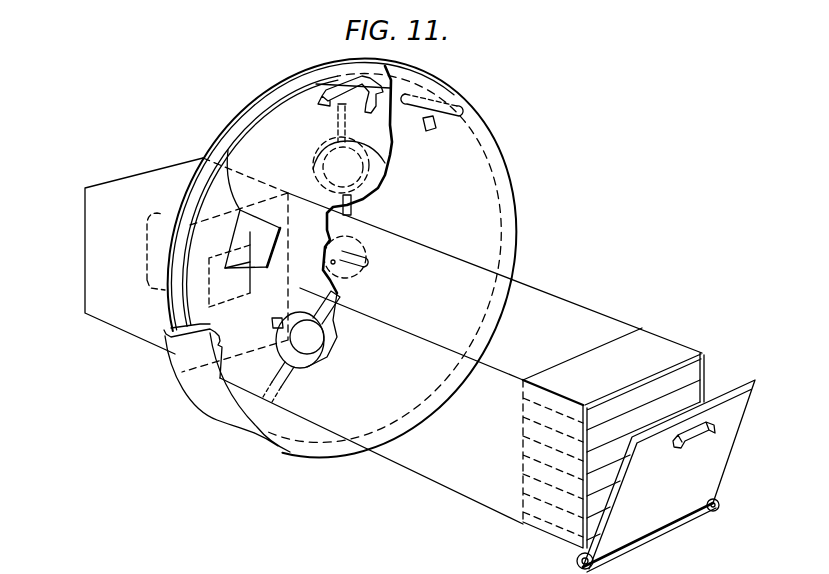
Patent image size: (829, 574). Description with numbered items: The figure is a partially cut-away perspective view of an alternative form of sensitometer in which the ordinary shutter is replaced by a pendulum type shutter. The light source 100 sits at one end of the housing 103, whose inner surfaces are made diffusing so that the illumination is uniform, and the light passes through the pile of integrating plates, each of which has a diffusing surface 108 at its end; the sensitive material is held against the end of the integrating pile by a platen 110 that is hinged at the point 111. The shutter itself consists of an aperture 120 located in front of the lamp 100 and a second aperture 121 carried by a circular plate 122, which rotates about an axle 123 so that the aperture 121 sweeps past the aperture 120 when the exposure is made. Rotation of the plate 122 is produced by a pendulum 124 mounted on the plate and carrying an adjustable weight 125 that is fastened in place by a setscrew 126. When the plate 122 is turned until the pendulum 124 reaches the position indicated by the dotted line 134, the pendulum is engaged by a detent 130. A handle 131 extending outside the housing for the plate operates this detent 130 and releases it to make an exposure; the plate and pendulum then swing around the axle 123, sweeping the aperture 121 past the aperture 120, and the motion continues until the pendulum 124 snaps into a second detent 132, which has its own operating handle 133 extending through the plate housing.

The light source 100 is at (147, 238).
The housing 103 is at (556, 298).
The diffusing surface 108 is at (690, 383).
The platen 110 is at (712, 416).
The hinge point 111 is at (577, 562).
The aperture 120 is at (163, 334).
The aperture 121 is at (228, 150).
The circular plate 122 is at (247, 143).
The axle 123 is at (352, 255).
The pendulum 124 is at (226, 407).
The adjustable weight 125 is at (298, 352).
The setscrew 126 is at (273, 323).
The detent 130 is at (333, 88).
The handle 131 is at (390, 88).
The second detent 132 is at (435, 130).
The operating handle 133 is at (463, 106).
The dotted line 134 is at (389, 176).